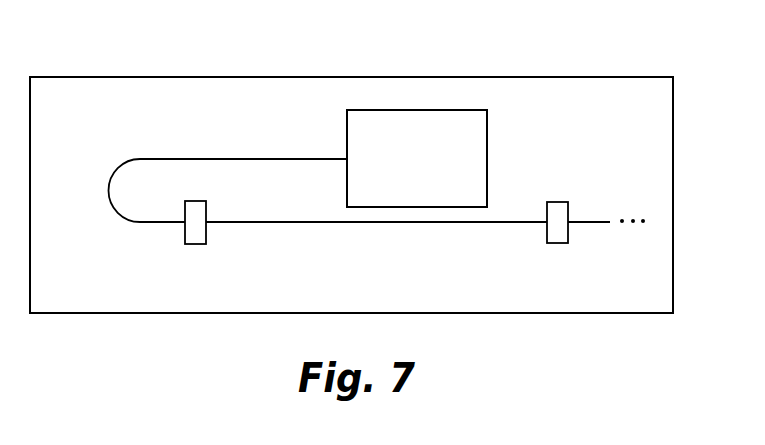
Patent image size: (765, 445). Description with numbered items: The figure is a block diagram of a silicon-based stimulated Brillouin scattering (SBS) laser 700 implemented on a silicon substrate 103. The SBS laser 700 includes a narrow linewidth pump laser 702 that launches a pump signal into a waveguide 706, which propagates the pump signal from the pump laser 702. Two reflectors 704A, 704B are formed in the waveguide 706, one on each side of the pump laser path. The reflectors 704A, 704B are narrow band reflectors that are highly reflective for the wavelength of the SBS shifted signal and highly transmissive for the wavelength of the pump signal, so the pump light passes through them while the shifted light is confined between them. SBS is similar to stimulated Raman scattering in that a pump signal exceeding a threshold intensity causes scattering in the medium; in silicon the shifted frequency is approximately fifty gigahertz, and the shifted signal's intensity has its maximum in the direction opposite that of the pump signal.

The silicon-based stimulated Brillouin scattering (SBS) laser 700 is at (247, 63).
The narrow linewidth pump laser 702 is at (488, 134).
The reflector 704A is at (196, 244).
The reflector 704B is at (558, 243).
The waveguide 706 is at (343, 222).
The silicon substrate 103 is at (361, 300).